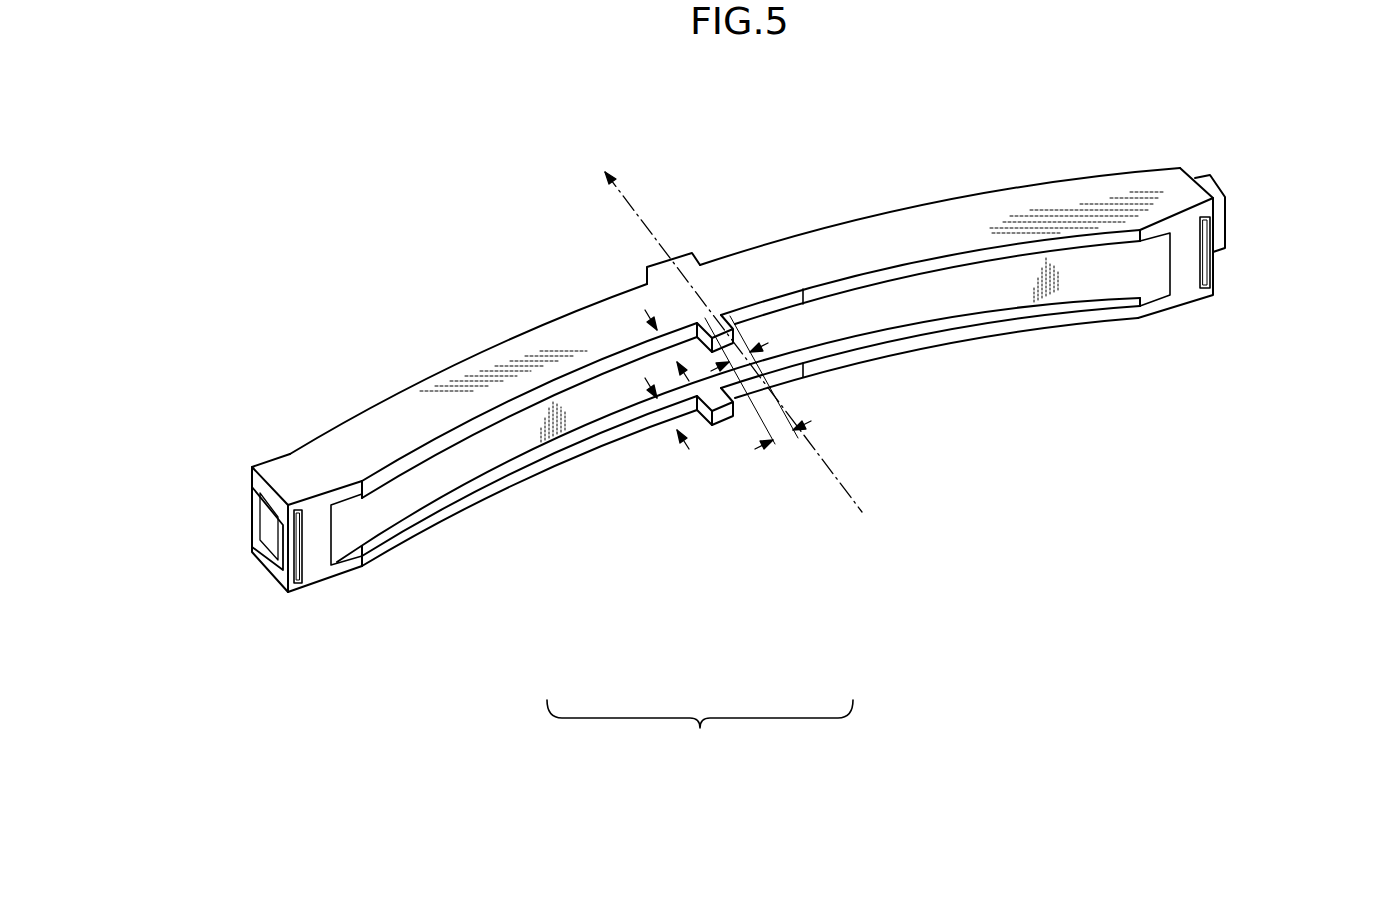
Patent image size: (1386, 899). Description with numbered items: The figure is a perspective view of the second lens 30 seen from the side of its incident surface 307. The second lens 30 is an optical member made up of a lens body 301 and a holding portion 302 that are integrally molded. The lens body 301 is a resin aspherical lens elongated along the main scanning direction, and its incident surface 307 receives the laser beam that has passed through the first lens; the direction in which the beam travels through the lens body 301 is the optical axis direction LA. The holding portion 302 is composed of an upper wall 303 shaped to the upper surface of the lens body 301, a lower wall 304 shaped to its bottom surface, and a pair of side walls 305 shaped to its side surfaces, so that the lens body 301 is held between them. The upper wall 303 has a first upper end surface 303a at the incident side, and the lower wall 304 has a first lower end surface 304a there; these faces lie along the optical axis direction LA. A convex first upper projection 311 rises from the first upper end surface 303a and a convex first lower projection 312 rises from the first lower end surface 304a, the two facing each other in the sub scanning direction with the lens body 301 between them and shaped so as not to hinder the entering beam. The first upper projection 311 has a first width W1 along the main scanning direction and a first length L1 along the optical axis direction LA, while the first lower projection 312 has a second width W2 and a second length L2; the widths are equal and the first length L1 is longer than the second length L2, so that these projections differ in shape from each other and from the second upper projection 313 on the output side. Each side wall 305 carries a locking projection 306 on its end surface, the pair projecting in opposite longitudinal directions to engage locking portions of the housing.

The second lens 30 is at (445, 289).
The lens body 301 is at (1084, 282).
The holding portion 302 is at (700, 732).
The upper wall 303 is at (455, 437).
The first upper end surface 303a is at (862, 286).
The lower wall 304 is at (600, 440).
The first lower end surface 304a is at (924, 345).
The side walls 305 is at (318, 566).
The locking projection 306 is at (268, 530).
The incident surface 307 is at (998, 294).
The first upper projection 311 is at (733, 300).
The first lower projection 312 is at (782, 392).
The second upper projection 313 is at (683, 258).
The optical axis direction LA is at (733, 362).
The first length L1 is at (649, 345).
The second length L2 is at (649, 413).
The first width W1 is at (755, 380).
The second width W2 is at (772, 448).